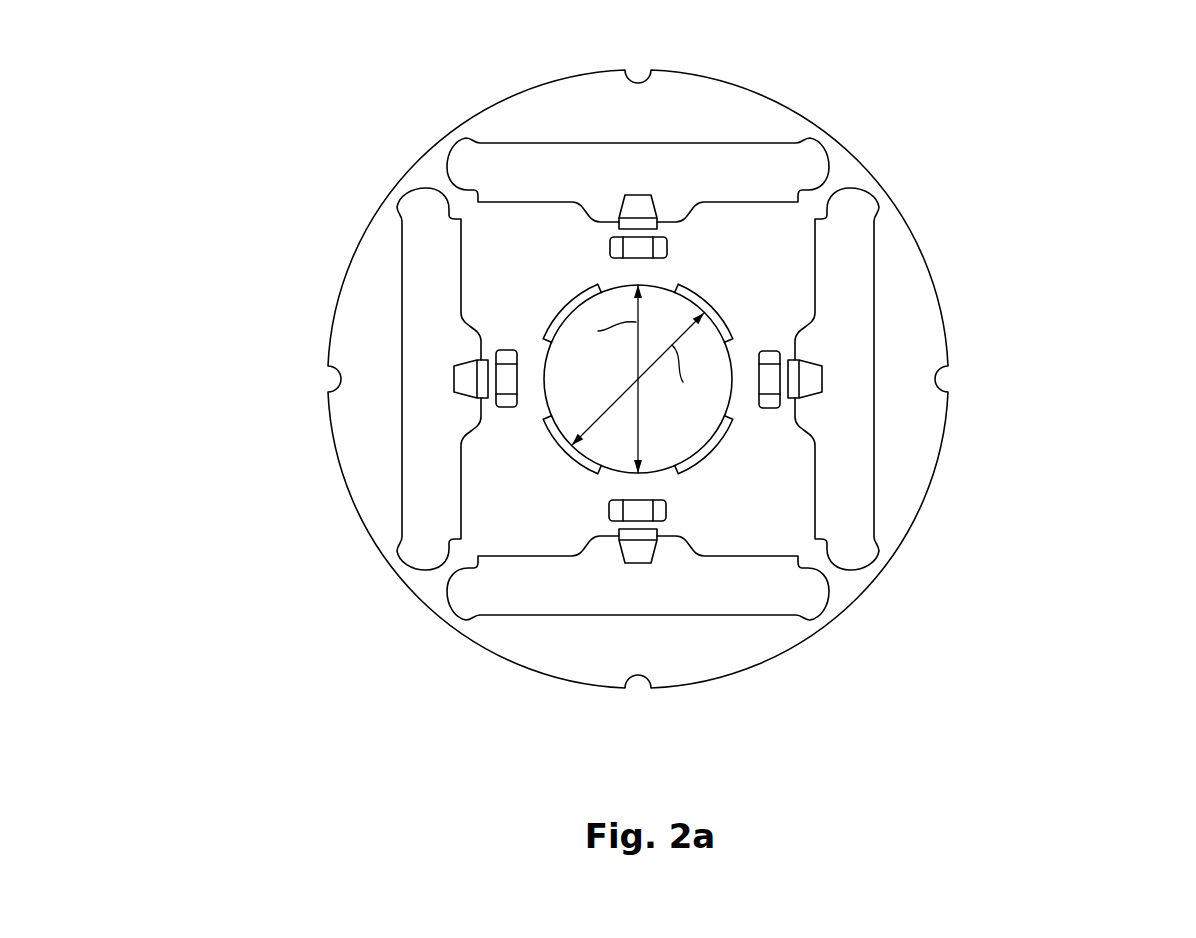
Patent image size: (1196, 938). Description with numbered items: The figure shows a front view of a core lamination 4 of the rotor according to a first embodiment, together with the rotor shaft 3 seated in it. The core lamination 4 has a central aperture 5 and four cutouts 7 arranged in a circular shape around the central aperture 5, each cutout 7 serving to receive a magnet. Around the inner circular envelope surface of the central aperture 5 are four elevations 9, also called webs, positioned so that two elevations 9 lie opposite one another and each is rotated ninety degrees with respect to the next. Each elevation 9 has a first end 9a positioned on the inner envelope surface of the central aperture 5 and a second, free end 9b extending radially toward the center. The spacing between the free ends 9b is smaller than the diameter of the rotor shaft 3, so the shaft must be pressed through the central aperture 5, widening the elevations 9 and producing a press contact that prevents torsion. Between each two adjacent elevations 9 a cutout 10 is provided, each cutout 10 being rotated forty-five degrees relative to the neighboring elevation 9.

The rotor shaft 3 is at (549, 350).
The core lamination 4 is at (843, 180).
The central aperture 5 is at (752, 413).
The cutout 7 is at (473, 160).
The elevation 9 is at (661, 280).
The first end 9a is at (730, 343).
The second end 9b is at (737, 386).
The cutout 10 is at (568, 307).